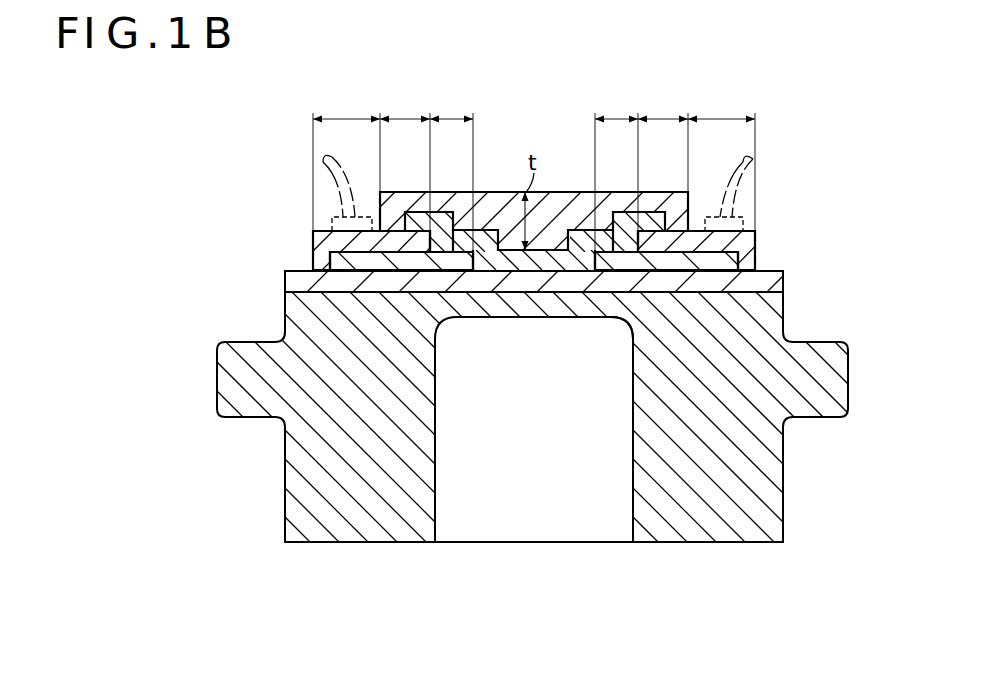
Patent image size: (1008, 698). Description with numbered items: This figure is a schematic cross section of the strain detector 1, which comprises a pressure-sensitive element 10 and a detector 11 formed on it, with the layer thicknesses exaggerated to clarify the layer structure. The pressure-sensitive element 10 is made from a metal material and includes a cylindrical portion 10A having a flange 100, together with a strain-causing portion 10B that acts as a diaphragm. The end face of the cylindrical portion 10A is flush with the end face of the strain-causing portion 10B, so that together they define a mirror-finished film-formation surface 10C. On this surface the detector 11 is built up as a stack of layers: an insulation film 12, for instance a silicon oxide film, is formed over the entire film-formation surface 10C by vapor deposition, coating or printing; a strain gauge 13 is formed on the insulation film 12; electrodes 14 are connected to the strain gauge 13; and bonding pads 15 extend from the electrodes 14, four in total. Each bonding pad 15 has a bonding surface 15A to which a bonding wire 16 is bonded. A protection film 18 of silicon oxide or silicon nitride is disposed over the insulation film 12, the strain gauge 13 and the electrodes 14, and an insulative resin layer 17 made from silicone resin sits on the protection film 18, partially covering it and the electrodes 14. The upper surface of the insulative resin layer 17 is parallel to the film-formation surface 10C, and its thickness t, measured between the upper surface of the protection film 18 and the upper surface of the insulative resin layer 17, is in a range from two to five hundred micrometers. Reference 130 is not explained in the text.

The strain detector 1 is at (208, 231).
The pressure-sensitive element 10 is at (558, 410).
The cylindrical portion 10A is at (436, 384).
The strain-causing portion 10B is at (510, 318).
The film-formation surface 10C is at (603, 282).
The detector 11 is at (785, 261).
The insulation film 12 is at (750, 284).
The strain gauge 13 is at (534, 173).
The electrodes 14 is at (525, 173).
The bonding pads 15 is at (778, 235).
The bonding surface 15A is at (323, 226).
The bonding wires 16 is at (340, 189).
The insulative resin layer 17 is at (560, 204).
The protection film 18 is at (543, 263).
The flange 100 is at (217, 379).
The lower electrode layer 130 is at (342, 256).